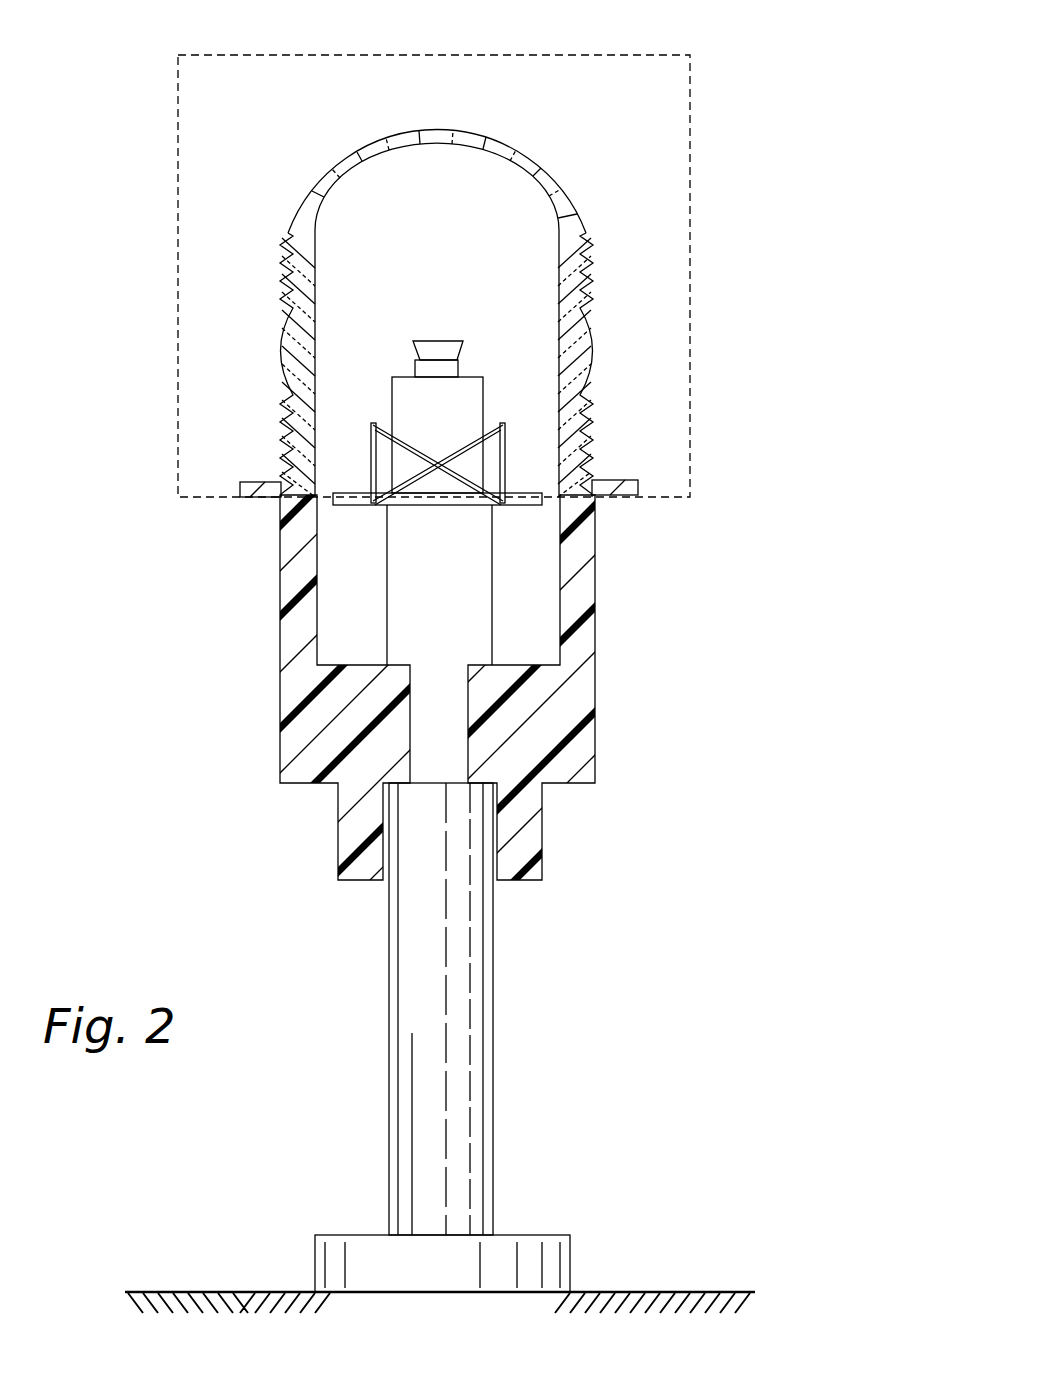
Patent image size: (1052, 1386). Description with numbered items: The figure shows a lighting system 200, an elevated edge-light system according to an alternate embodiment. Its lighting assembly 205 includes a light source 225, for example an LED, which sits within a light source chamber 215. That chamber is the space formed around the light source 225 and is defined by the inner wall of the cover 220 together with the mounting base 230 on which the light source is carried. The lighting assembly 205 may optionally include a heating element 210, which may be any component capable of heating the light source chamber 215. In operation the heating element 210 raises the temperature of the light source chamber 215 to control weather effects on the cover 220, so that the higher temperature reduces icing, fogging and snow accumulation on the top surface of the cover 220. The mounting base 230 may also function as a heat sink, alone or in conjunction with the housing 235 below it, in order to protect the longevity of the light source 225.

The lighting system 200 is at (758, 130).
The lighting assembly 205 is at (320, 55).
The heating element 210 is at (512, 447).
The light source chamber 215 is at (460, 252).
The cover 220 is at (505, 150).
The light source 225 is at (432, 338).
The mounting base 230 is at (350, 493).
The housing 235 is at (597, 636).